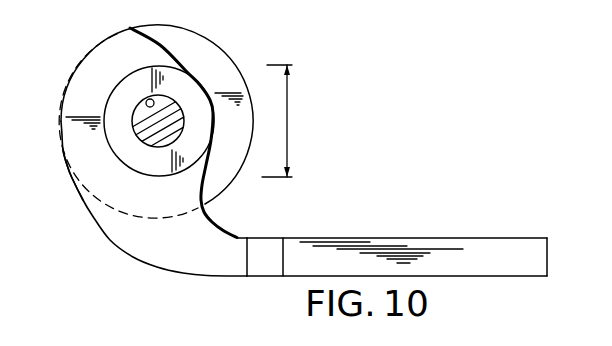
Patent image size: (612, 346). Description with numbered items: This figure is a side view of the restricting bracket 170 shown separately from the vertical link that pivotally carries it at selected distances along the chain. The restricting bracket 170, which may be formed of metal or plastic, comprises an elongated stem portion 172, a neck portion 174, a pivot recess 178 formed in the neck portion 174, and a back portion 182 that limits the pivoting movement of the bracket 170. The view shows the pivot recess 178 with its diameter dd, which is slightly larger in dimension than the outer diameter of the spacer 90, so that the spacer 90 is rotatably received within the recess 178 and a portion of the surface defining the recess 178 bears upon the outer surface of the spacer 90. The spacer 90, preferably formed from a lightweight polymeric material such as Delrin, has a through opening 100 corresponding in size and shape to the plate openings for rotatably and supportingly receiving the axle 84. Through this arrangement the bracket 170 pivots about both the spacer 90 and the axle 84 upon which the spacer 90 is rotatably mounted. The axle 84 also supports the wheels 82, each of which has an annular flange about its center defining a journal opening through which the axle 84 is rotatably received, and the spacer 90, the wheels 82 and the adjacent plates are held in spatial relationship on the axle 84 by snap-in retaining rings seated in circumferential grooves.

The wheel 82 is at (220, 48).
The axle 84 is at (172, 113).
The spacer 90 is at (209, 142).
The through opening 100 is at (147, 100).
The restricting bracket 170 is at (445, 223).
The stem portion 172 is at (497, 238).
The neck portion 174 is at (225, 228).
The pivot recess 178 is at (137, 170).
The back portion 182 is at (73, 176).
The diameter of the recess dd is at (288, 132).